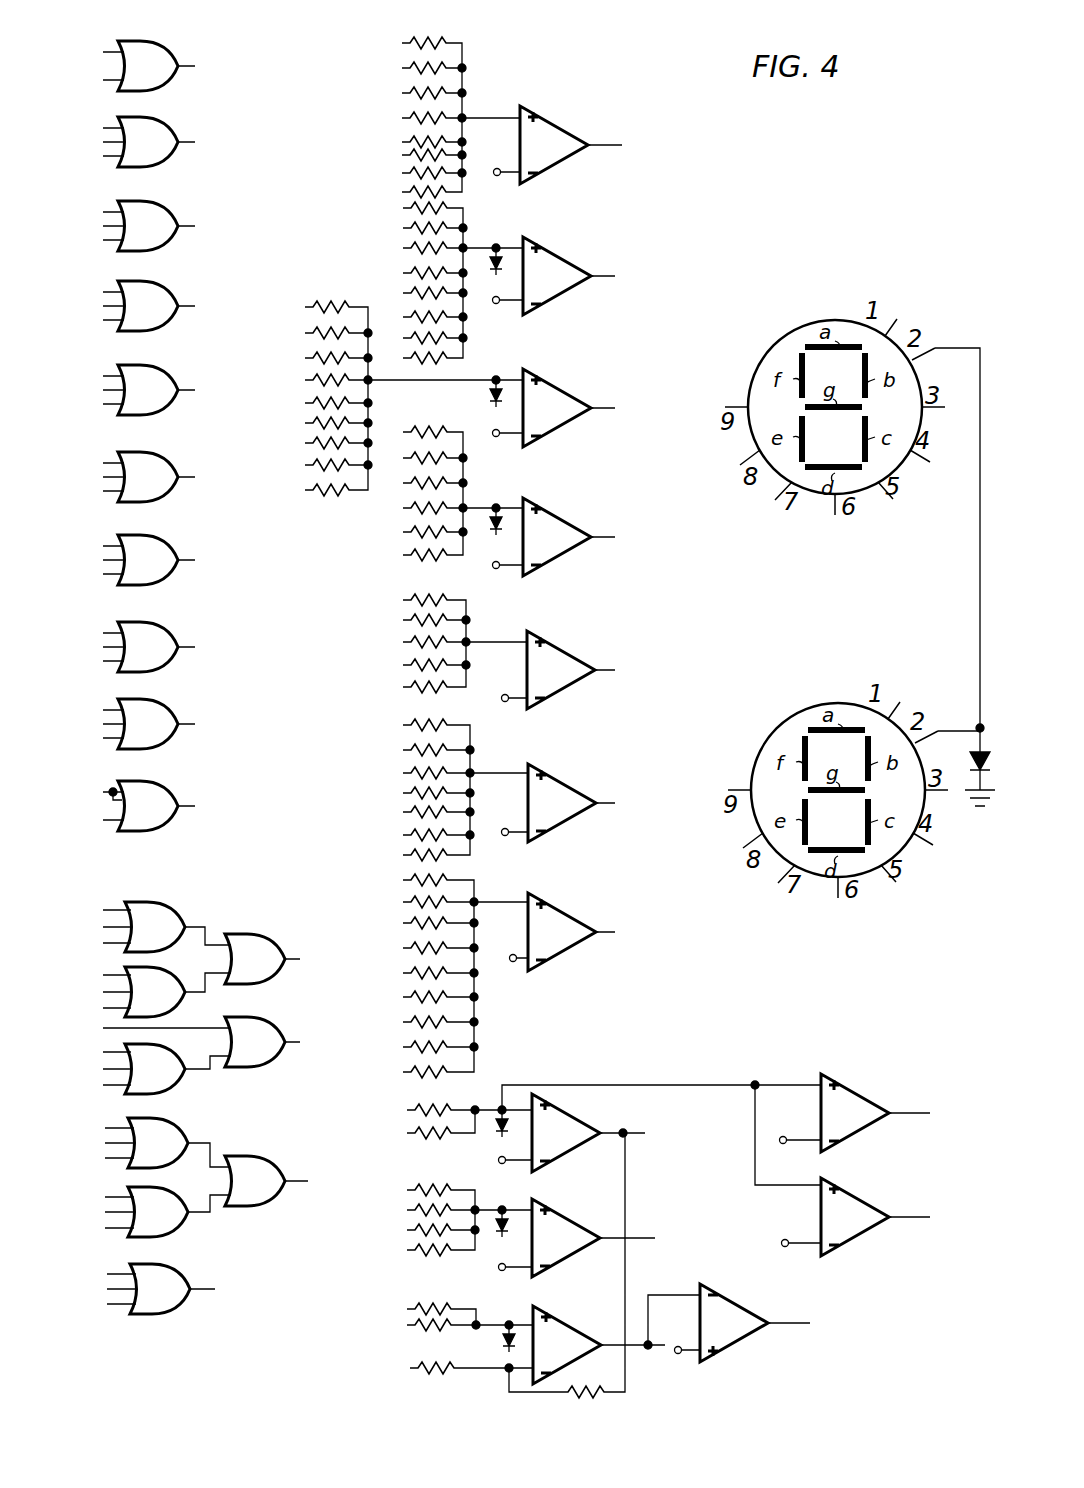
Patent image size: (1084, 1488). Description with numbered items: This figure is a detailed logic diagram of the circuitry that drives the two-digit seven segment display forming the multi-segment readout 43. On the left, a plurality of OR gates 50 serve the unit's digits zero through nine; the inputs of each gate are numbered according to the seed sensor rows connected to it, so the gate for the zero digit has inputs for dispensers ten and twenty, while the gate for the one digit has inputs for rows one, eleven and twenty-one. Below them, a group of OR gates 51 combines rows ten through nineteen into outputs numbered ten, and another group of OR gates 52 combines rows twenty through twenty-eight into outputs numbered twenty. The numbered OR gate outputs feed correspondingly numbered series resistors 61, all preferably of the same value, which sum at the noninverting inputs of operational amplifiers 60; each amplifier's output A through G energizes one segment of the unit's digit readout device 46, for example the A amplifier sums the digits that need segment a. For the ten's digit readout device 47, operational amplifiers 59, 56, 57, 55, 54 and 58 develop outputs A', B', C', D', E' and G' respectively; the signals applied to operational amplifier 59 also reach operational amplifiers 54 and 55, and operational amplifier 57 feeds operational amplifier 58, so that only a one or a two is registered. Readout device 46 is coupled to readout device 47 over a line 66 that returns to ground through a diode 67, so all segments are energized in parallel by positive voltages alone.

The multi-segment readout 43 is at (785, 568).
The unit's digit readout device 46 is at (750, 372).
The ten's digit readout device 47 is at (778, 735).
The OR gates 50 is at (186, 33).
The group of OR gates 51 is at (195, 900).
The group of OR gates 52 is at (215, 1135).
The operational amplifier 54 is at (869, 1200).
The operational amplifier 55 is at (864, 1084).
The operational amplifier 56 is at (572, 1225).
The operational amplifier 57 is at (572, 1332).
The operational amplifier 58 is at (758, 1304).
The operational amplifier 59 is at (572, 1120).
The operational amplifiers 60 is at (558, 105).
The series resistors 61 is at (445, 33).
The line 66 is at (980, 575).
The diode 67 is at (980, 762).